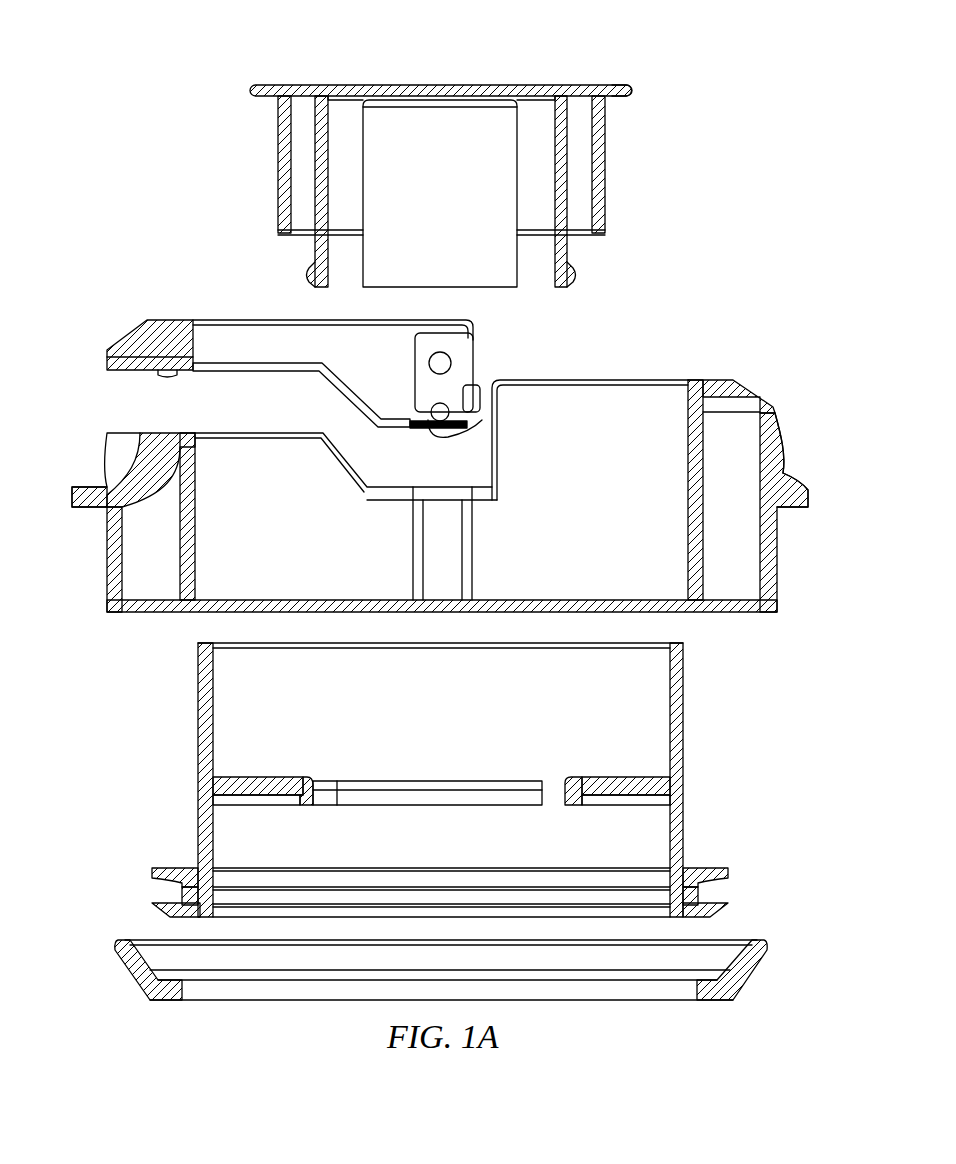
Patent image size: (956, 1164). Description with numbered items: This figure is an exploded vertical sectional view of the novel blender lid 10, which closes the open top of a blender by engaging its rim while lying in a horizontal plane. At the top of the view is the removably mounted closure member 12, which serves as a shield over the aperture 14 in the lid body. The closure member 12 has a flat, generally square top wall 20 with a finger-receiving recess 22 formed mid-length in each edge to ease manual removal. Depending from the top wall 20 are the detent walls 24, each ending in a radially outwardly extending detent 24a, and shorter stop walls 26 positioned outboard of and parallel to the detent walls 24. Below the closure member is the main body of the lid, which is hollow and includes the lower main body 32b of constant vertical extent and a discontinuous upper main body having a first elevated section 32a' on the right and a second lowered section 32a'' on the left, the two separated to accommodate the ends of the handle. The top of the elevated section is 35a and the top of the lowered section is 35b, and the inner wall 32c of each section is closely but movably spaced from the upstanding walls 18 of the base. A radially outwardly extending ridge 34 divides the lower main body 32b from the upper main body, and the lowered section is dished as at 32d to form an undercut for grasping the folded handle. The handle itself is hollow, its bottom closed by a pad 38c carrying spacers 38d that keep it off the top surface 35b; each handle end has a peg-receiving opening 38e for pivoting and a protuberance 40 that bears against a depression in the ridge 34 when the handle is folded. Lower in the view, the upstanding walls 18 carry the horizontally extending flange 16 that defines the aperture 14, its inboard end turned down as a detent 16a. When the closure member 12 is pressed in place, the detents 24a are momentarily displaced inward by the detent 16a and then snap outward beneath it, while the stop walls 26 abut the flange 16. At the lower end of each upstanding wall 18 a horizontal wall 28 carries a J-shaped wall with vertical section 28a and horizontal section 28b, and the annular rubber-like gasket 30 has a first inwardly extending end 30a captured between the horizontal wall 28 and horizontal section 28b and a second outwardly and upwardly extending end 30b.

The lid 10 is at (616, 34).
The closure member 12 is at (617, 155).
The aperture 14 is at (545, 798).
The flange 16 is at (290, 780).
The detent 16a is at (578, 805).
The upstanding walls 18 is at (690, 710).
The top wall 20 is at (440, 85).
The finger-receiving recess 22 is at (628, 87).
The detent walls 24 is at (314, 143).
The detent 24a is at (578, 272).
The stop walls 26 is at (278, 160).
The horizontal wall 28 is at (165, 868).
The vertical section 28a is at (165, 893).
The horizontal section 28b is at (165, 908).
The gasket 30 is at (742, 980).
The first end of gasket 30a is at (725, 1005).
The second end of gasket 30b is at (120, 982).
The first elevated section 32a' is at (814, 442).
The second lowered section 32a'' is at (86, 470).
The lower main body 32b is at (107, 538).
The inner wall 32c is at (190, 575).
The dished region 32d is at (140, 455).
The ridge 34 is at (800, 490).
The top of first elevated section 35a is at (736, 375).
The top of second lowered section 35b is at (180, 435).
The pad 38c is at (118, 340).
The spacers 38d is at (160, 376).
The peg-receiving opening 38e is at (450, 362).
The protuberance 40 is at (490, 415).